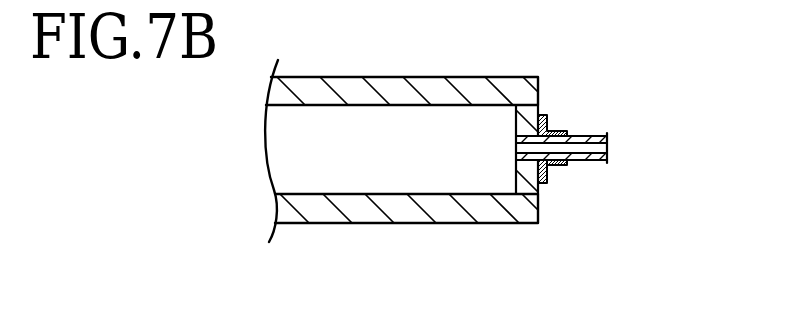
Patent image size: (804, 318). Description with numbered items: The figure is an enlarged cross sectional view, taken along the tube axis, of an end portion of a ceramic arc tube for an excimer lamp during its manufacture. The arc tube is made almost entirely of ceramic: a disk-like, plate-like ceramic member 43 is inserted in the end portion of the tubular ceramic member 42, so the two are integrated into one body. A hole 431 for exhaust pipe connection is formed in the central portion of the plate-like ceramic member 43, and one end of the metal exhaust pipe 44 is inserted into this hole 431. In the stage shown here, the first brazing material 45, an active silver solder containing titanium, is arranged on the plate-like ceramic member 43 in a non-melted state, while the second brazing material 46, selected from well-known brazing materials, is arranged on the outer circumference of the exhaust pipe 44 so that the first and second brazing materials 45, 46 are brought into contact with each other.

The tubular ceramic member 42 is at (358, 81).
The plate-like ceramic member 43 is at (541, 110).
The exhaust pipe 44 is at (587, 135).
The first brazing material 45 is at (546, 184).
The second brazing material 46 is at (556, 167).
The hole 431 is at (536, 219).